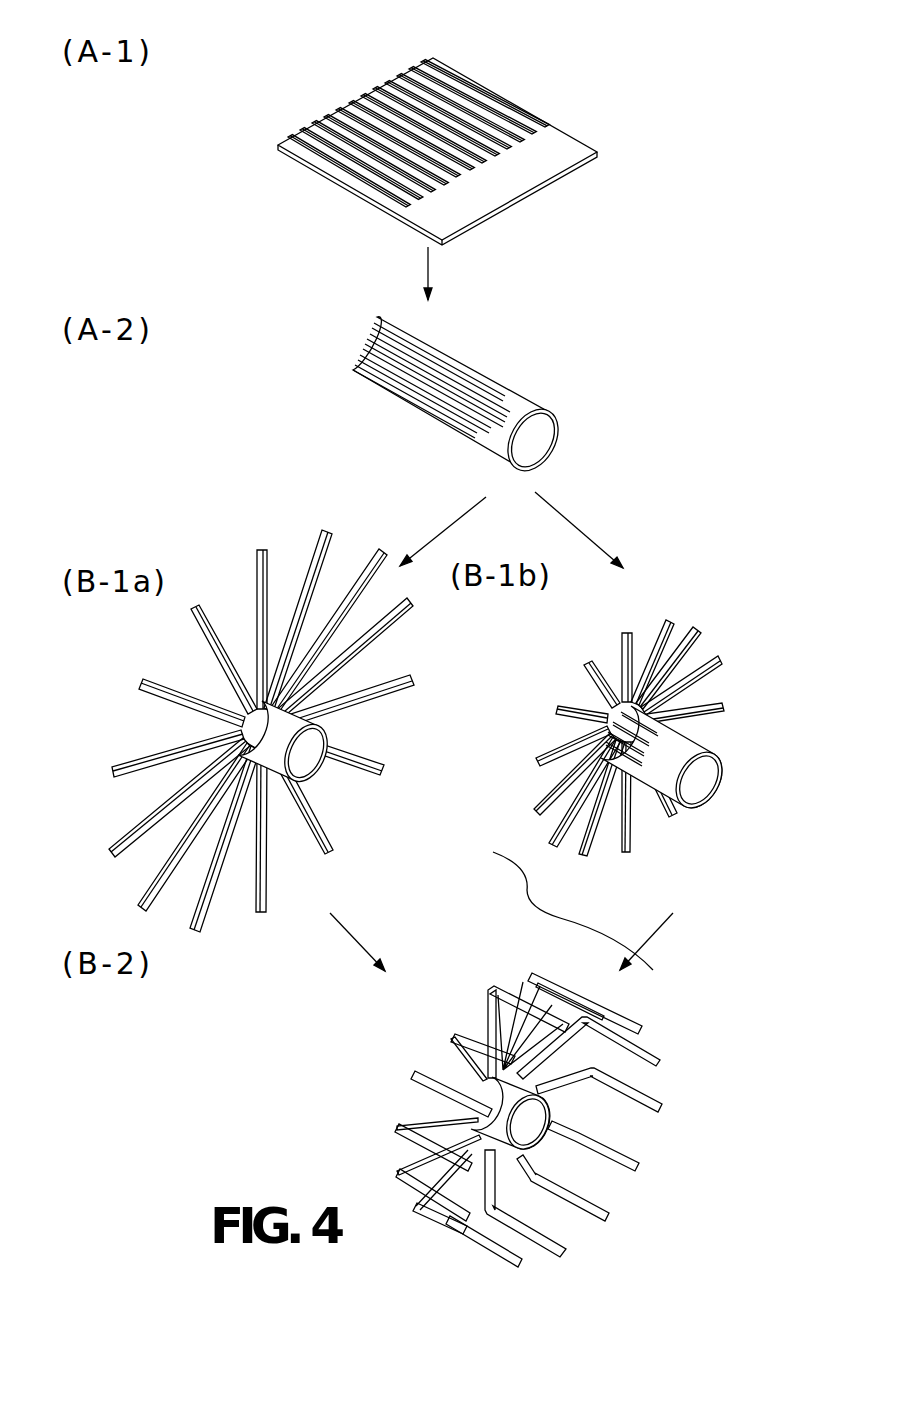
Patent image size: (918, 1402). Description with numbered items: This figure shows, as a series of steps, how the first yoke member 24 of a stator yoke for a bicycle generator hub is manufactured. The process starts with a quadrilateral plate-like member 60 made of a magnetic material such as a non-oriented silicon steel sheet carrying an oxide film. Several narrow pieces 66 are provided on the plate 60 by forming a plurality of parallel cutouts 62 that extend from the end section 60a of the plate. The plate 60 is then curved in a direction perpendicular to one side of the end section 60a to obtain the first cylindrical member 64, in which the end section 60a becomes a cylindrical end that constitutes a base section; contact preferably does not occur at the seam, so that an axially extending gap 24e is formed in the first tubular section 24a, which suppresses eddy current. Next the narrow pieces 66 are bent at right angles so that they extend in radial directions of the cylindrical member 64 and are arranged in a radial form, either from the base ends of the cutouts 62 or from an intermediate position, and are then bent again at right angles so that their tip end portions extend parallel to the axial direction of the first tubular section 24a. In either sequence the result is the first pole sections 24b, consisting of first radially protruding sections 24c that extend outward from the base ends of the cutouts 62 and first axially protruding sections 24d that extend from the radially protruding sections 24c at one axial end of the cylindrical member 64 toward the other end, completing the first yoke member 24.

The quadrilateral plate-like member 60 is at (595, 112).
The end section 60a is at (583, 150).
The cutouts 62 is at (455, 85).
The narrow pieces 66 is at (395, 92).
The first cylindrical member 64 is at (532, 383).
The first yoke member 24 is at (548, 833).
The first tubular section 24a is at (305, 716).
The first pole sections 24b is at (449, 1048).
The first radially protruding sections 24c is at (526, 986).
The first axially protruding sections 24d is at (560, 980).
The axially extending gap 24e is at (527, 432).